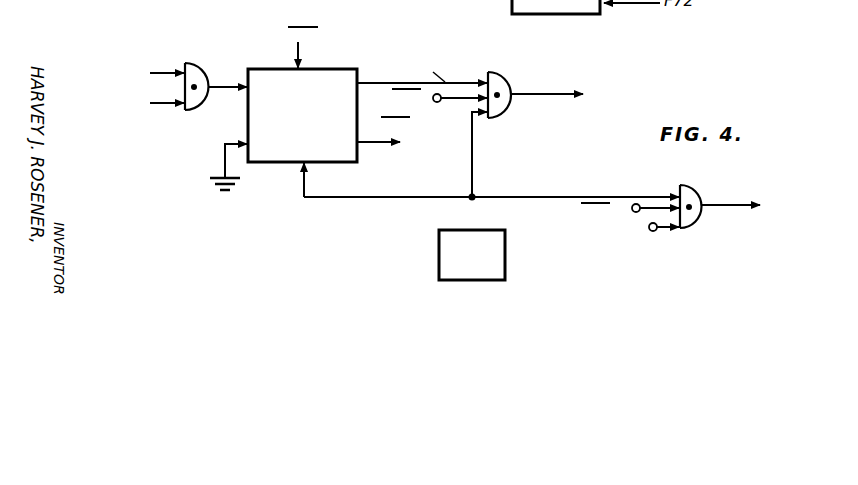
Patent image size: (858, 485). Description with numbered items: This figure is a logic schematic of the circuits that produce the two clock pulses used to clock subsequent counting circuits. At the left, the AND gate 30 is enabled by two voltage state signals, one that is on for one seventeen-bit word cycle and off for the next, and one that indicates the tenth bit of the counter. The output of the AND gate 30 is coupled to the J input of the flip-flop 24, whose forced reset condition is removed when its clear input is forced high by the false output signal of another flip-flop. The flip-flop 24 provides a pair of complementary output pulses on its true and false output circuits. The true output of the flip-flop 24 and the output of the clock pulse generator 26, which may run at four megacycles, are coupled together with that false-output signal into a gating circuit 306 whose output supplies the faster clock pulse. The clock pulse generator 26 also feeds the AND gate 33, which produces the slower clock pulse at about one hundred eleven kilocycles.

The AND gate 30 is at (201, 71).
The flip-flop 24 is at (325, 77).
The AND gate 306 is at (498, 79).
The clock pulse generator 26 is at (504, 233).
The AND gate 33 is at (688, 188).